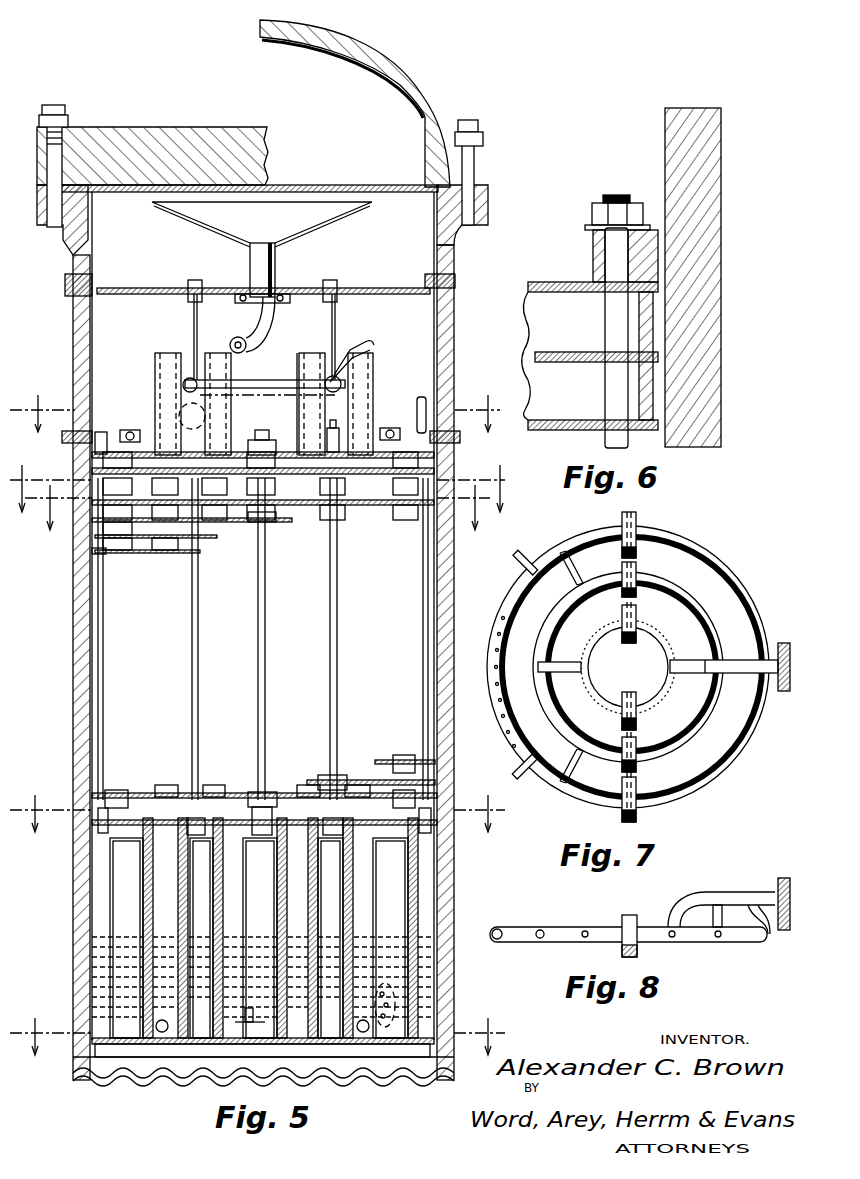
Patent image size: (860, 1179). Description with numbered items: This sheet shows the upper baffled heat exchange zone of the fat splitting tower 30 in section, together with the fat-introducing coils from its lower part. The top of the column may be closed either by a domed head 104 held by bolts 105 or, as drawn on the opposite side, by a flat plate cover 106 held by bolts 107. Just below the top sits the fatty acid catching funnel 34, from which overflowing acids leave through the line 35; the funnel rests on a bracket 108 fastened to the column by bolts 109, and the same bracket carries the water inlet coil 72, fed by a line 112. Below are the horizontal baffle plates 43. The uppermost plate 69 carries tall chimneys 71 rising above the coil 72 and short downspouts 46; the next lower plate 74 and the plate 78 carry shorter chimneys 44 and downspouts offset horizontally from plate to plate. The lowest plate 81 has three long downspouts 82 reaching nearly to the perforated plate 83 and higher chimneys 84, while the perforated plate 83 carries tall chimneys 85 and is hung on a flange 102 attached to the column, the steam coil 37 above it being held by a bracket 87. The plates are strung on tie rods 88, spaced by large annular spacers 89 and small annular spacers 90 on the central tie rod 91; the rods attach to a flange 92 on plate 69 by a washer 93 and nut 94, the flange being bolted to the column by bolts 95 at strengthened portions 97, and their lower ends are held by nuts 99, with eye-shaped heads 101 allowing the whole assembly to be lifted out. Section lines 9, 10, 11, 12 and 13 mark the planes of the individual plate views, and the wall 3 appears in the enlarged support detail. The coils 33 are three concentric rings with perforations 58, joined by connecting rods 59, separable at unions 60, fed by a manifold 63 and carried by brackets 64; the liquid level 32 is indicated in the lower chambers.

In FIG. 6, the wall 3 is at (708, 400).
In FIG. 5, the section line 9 is at (255, 411).
In FIG. 5, the section line 10 is at (262, 503).
In FIG. 5, the section line 11 is at (264, 485).
In FIG. 5, the section line 12 is at (260, 811).
In FIG. 5, the section line 13 is at (260, 1034).
In FIG. 5, the tower 30 is at (73, 664).
In FIG. 5, the liquid 32 is at (100, 935).
In FIG. 7, the coils 33 is at (752, 740).
In FIG. 8, the coils 33 is at (590, 926).
In FIG. 5, the fatty acid catching funnel 34 is at (216, 230).
In FIG. 5, the line 35 is at (230, 336).
In FIG. 5, the steam coil 37 is at (168, 1032).
In FIG. 5, the horizontal baffle plates 43 is at (236, 538).
In FIG. 5, the chimneys 44 is at (180, 550).
In FIG. 5, the downspouts 46 is at (116, 555).
In FIG. 7, the perforations 58 is at (594, 638).
In FIG. 7, the connecting rods 59 is at (568, 578).
In FIG. 7, the unions 60 is at (636, 596).
In FIG. 8, the unions 60 is at (630, 914).
In FIG. 7, the manifold 63 is at (752, 658).
In FIG. 8, the manifold 63 is at (762, 894).
In FIG. 7, the brackets 64 is at (514, 566).
In FIG. 5, the uppermost plate 69 is at (286, 452).
In FIG. 6, the uppermost plate 69 is at (560, 282).
In FIG. 5, the tall chimneys 71 is at (312, 360).
In FIG. 5, the water inlet coil 72 is at (286, 382).
In FIG. 5, the next lower plate 74 is at (454, 466).
In FIG. 6, the next lower plate 74 is at (574, 352).
In FIG. 5, the plate 78 is at (385, 506).
In FIG. 6, the plate 78 is at (570, 420).
In FIG. 5, the lowest plate 81 is at (172, 845).
In FIG. 5, the long downspouts 82 is at (223, 914).
In FIG. 5, the perforated plate 83 is at (296, 1046).
In FIG. 5, the chimneys 84 is at (245, 784).
In FIG. 5, the tall chimneys 85 is at (110, 886).
In FIG. 5, the bracket 87 is at (262, 998).
In FIG. 5, the tie rods 88 is at (104, 678).
In FIG. 6, the tie rods 88 is at (606, 322).
In FIG. 5, the annular spacers 89 is at (415, 520).
In FIG. 6, the annular spacers 89 is at (639, 388).
In FIG. 5, the small annular spacers 90 is at (275, 522).
In FIG. 5, the central tie rod 91 is at (268, 596).
In FIG. 5, the flange 92 is at (122, 420).
In FIG. 6, the flange 92 is at (642, 230).
In FIG. 6, the washer 93 is at (588, 226).
In FIG. 5, the nut 94 is at (344, 436).
In FIG. 6, the nut 94 is at (598, 204).
In FIG. 5, the bolts 95 is at (130, 430).
In FIG. 5, the strengthened portion 97 is at (64, 437).
In FIG. 5, the nuts 99 is at (452, 822).
In FIG. 5, the eye-shaped heads 101 is at (168, 384).
In FIG. 5, the flange 102 is at (430, 1050).
In FIG. 5, the domed head 104 is at (436, 92).
In FIG. 5, the bolts 105 is at (472, 120).
In FIG. 5, the flat plate cover 106 is at (110, 127).
In FIG. 5, the bolts 107 is at (70, 93).
In FIG. 5, the bracket 108 is at (292, 288).
In FIG. 5, the bolts 109 is at (430, 278).
In FIG. 5, the line 112 is at (404, 340).